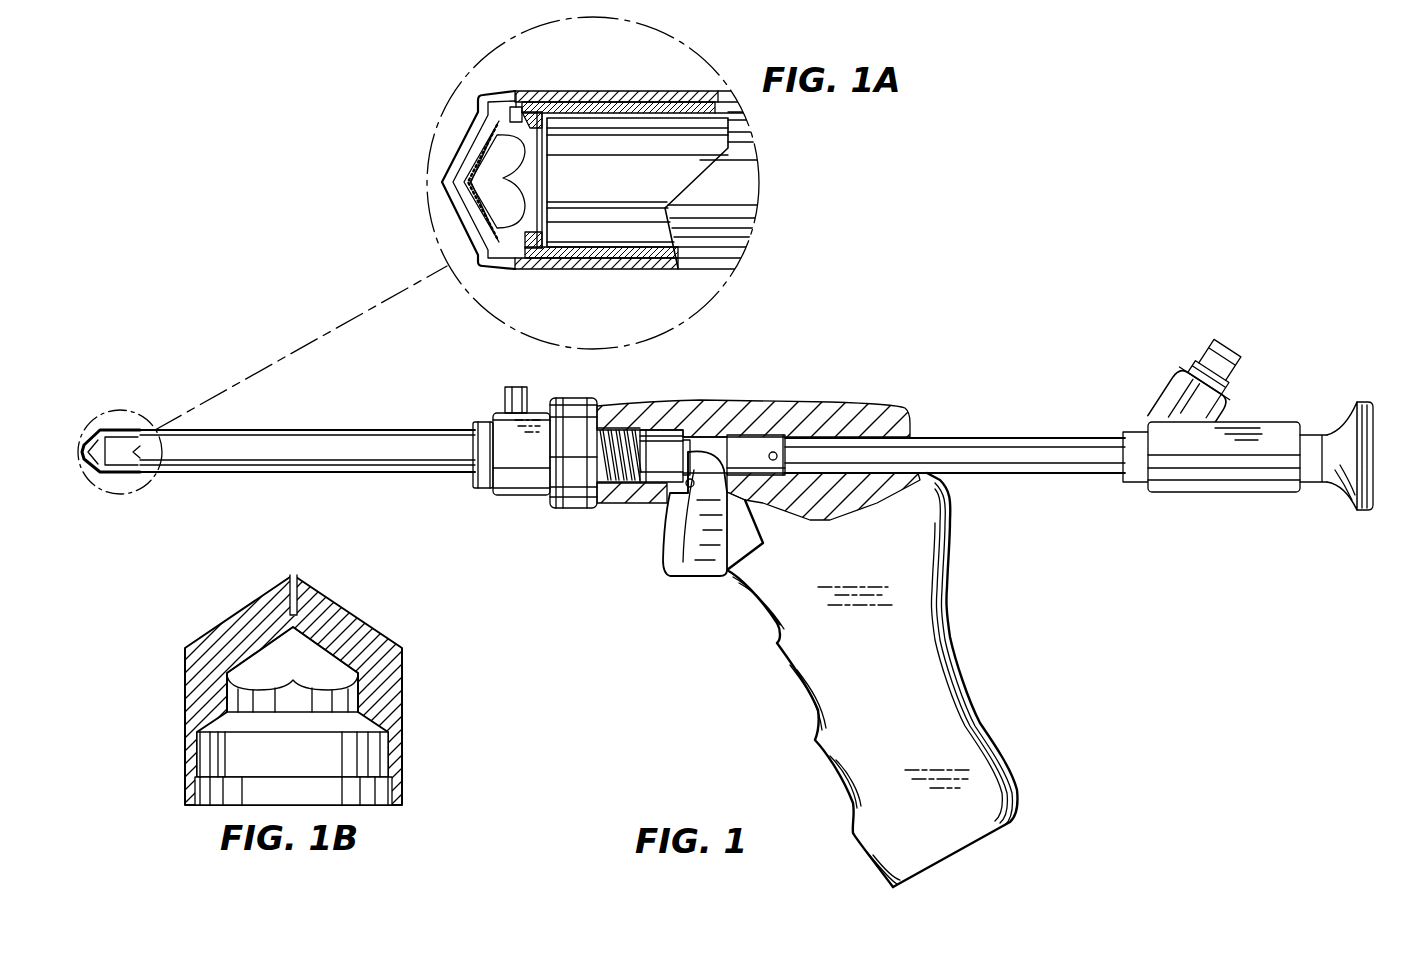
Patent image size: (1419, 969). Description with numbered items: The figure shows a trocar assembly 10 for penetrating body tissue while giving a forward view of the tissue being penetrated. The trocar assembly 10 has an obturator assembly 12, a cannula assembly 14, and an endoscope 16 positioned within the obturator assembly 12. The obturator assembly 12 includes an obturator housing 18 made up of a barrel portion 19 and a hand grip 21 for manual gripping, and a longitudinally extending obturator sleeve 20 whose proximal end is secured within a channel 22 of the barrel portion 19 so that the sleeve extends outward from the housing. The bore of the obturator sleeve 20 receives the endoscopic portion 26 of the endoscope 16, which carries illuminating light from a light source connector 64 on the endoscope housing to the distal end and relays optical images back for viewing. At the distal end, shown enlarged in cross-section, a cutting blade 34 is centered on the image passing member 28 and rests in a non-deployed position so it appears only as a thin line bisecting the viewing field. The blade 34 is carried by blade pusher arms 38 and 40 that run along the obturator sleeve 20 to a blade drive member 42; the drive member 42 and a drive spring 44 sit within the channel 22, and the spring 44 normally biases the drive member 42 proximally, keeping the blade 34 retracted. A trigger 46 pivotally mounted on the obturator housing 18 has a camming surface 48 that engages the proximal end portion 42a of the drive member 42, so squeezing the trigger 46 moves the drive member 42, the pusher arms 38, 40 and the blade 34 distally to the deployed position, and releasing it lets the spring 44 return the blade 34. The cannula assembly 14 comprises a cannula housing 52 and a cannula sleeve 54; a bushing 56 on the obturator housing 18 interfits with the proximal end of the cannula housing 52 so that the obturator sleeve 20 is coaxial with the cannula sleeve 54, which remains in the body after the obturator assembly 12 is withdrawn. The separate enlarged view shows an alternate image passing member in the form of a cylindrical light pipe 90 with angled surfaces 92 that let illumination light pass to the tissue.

In FIG. 1, the trocar assembly 10 is at (565, 614).
In FIG. 1, the obturator assembly 12 is at (866, 680).
In FIG. 1, the cannula assembly 14 is at (378, 482).
In FIG. 1, the endoscope 16 is at (1248, 434).
In FIG. 1, the obturator housing 18 is at (758, 486).
In FIG. 1, the barrel portion 19 is at (867, 412).
In FIG. 1A, the obturator sleeve 20 is at (634, 256).
In FIG. 1, the hand grip 21 is at (932, 637).
In FIG. 1, the channel 22 is at (747, 430).
In FIG. 1A, the endoscopic portion 26 is at (612, 130).
In FIG. 1, the endoscopic portion 26 is at (1005, 437).
In FIG. 1A, the image passing member 28 is at (460, 147).
In FIG. 1A, the cutting blade 34 is at (456, 163).
In FIG. 1A, the blade pusher arm 38 is at (517, 265).
In FIG. 1A, the blade pusher arm 40 is at (517, 113).
In FIG. 1, the blade drive member 42 is at (663, 462).
In FIG. 1, the proximal end portion 42a is at (690, 445).
In FIG. 1, the drive spring 44 is at (600, 465).
In FIG. 1, the trigger 46 is at (690, 563).
In FIG. 1, the camming surface 48 is at (692, 450).
In FIG. 1, the cannula housing 52 is at (503, 423).
In FIG. 1A, the cannula sleeve 54 is at (670, 268).
In FIG. 1, the cannula sleeve 54 is at (340, 440).
In FIG. 1, the bushing 56 is at (580, 405).
In FIG. 1, the light source connector 64 is at (1208, 350).
In FIG. 1B, the light pipe 90 is at (195, 692).
In FIG. 1B, the angled surfaces 92 is at (378, 720).